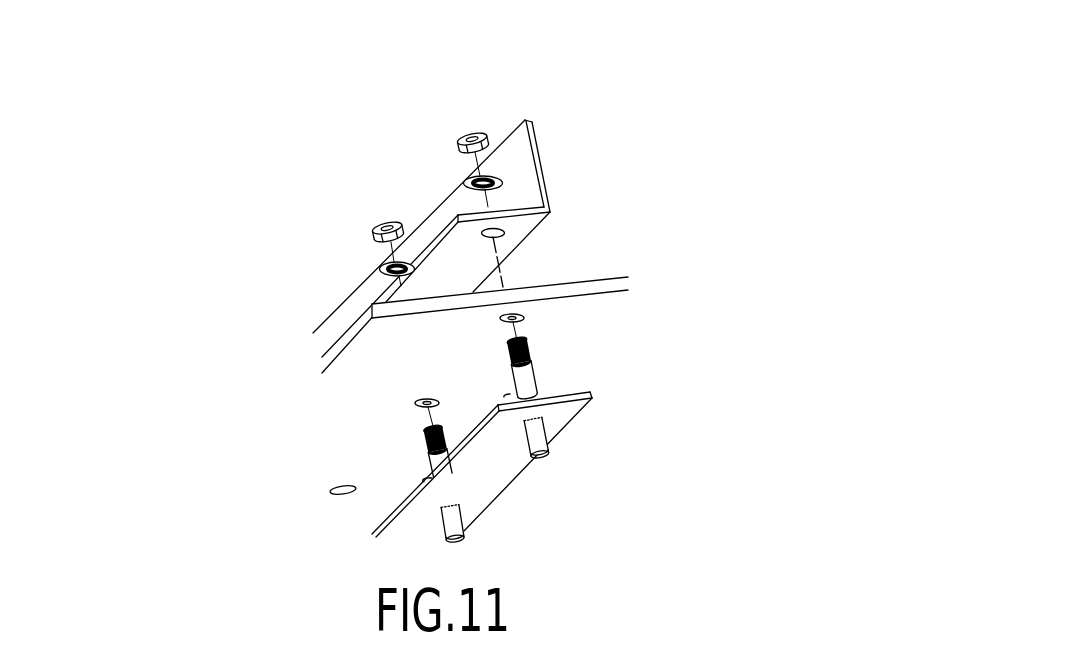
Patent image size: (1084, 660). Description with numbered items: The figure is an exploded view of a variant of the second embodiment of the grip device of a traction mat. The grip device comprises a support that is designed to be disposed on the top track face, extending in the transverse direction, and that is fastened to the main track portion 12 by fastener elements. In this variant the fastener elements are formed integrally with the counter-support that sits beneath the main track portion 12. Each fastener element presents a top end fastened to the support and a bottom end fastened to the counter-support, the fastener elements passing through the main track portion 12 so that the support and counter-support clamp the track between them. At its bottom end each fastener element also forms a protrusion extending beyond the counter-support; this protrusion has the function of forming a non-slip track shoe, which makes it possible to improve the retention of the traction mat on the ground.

The main track portion 12 is at (633, 283).